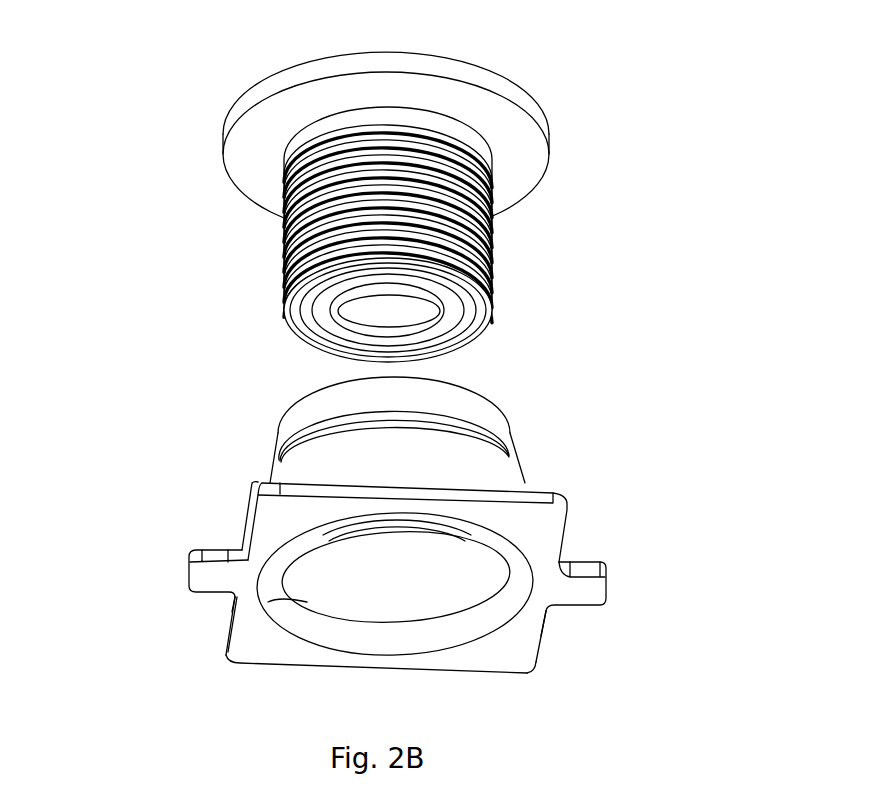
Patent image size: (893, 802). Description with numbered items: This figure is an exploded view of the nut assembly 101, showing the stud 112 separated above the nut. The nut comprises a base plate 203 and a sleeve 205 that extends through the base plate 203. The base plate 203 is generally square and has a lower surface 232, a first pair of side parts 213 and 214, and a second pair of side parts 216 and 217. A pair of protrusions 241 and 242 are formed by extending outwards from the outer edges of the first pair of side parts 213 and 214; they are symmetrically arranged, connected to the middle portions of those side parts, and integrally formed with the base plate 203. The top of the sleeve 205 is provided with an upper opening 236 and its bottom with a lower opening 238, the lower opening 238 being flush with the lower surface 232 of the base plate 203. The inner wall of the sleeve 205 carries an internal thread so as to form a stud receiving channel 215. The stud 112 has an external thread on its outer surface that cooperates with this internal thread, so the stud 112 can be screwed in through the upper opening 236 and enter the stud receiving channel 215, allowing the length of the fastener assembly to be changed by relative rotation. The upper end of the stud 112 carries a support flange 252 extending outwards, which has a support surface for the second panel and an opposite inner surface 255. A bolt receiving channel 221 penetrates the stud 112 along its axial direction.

The nut assembly 101 is at (723, 210).
The support flange 252 is at (243, 122).
The inner surface 255 is at (238, 153).
The stud 112 is at (477, 233).
The bolt receiving channel 221 is at (390, 307).
The upper opening 236 is at (305, 403).
The sleeve 205 is at (480, 463).
The base plate 203 is at (556, 523).
The side part 216 is at (308, 488).
The protrusion 241 is at (198, 577).
The protrusion 242 is at (580, 595).
The side part 213 is at (242, 617).
The side part 214 is at (532, 635).
The lower surface 232 is at (518, 654).
The side part 217 is at (463, 673).
The stud receiving channel 215 is at (363, 568).
The lower opening 238 is at (268, 602).